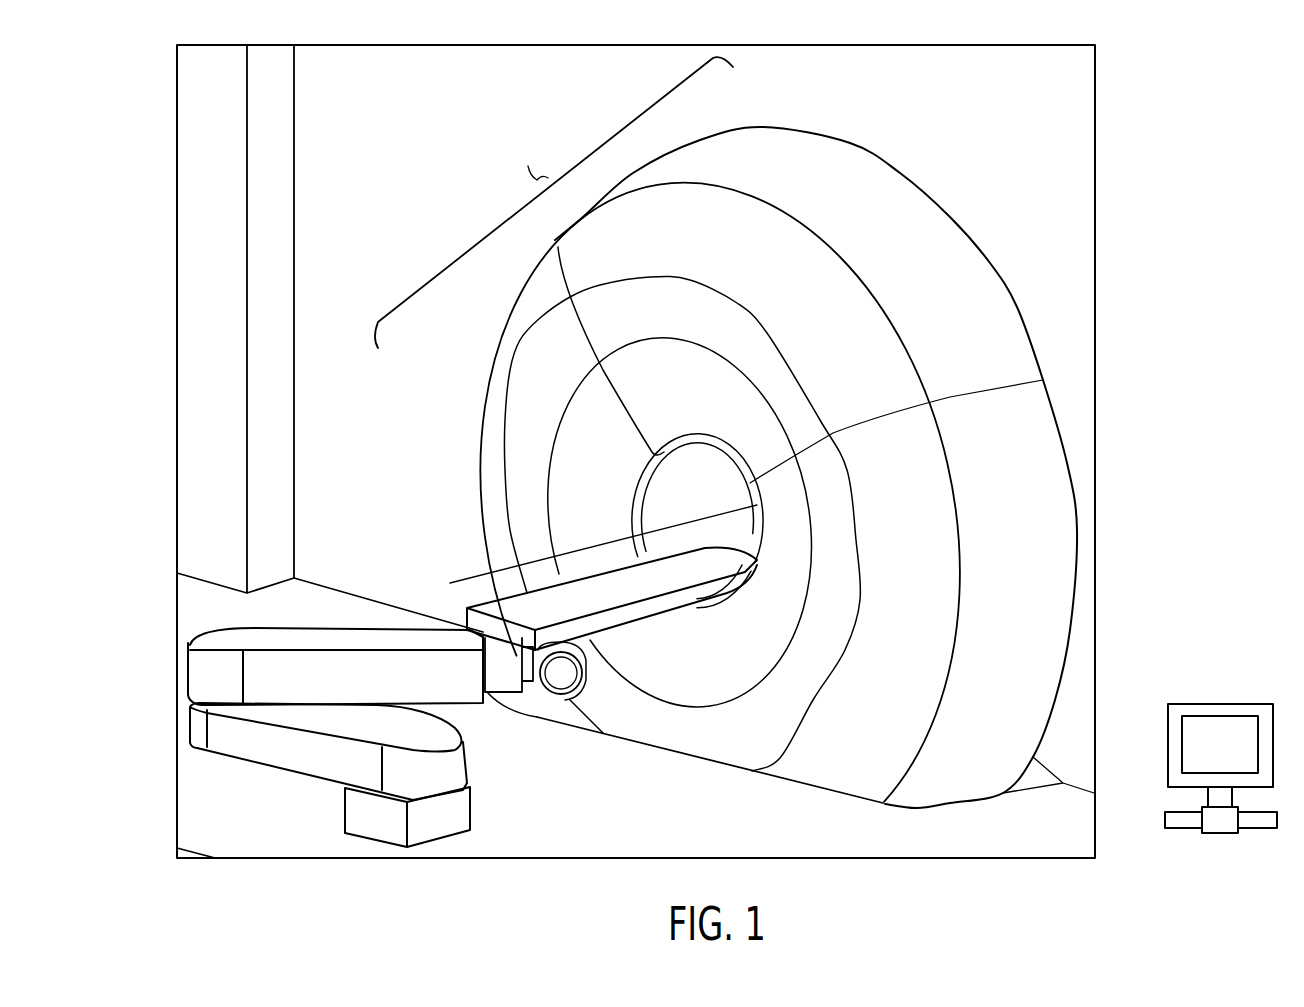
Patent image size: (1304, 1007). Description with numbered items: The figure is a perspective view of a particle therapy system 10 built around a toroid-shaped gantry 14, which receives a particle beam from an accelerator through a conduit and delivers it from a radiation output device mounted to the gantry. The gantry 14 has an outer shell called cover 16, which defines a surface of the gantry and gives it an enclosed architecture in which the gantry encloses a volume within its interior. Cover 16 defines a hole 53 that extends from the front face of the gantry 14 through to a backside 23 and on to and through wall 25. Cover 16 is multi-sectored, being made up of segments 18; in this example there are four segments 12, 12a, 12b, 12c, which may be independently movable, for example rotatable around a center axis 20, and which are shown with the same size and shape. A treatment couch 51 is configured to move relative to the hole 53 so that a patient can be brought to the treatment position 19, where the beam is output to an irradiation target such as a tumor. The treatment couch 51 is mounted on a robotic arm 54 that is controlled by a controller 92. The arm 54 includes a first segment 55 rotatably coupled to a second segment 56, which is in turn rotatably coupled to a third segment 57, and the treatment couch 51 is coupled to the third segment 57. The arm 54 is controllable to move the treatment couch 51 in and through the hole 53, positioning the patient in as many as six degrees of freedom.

The particle therapy system 10 is at (1150, 112).
The segment 12 is at (777, 451).
The segment 12a is at (487, 427).
The segment 12b is at (920, 225).
The segment 12c is at (722, 745).
The gantry 14 is at (636, 451).
The cover 16 is at (848, 135).
The segments 18 is at (955, 324).
The treatment position 19 is at (668, 560).
The center axis 20 is at (458, 578).
The backside 23 is at (1012, 300).
The wall 25 is at (1037, 166).
The treatment couch 51 is at (662, 607).
The hole 53 is at (715, 502).
The robotic arm 54 is at (375, 820).
The first segment 55 is at (315, 767).
The second segment 56 is at (283, 668).
The third segment 57 is at (555, 690).
The controller 92 is at (1220, 705).